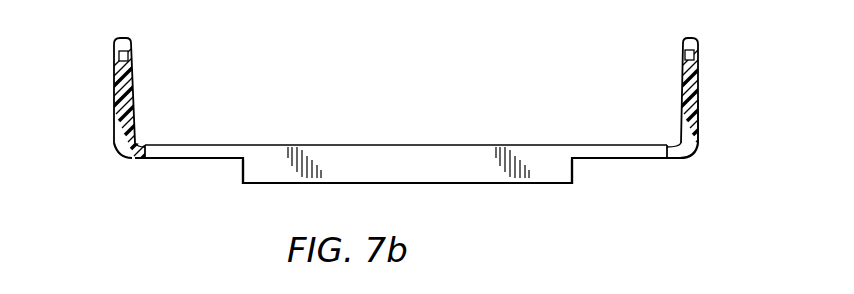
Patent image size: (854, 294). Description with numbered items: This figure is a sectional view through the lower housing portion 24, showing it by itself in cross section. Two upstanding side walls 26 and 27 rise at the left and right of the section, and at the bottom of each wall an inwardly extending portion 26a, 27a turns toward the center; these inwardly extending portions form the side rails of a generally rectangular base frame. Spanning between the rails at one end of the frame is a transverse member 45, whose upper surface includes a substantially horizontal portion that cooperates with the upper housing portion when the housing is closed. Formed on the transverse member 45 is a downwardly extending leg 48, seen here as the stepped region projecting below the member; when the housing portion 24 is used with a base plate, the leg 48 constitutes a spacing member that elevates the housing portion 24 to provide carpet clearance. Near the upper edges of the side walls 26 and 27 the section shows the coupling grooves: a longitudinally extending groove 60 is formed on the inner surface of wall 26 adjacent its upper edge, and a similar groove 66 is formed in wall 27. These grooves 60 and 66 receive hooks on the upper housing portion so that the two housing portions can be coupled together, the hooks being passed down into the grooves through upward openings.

The lower housing portion 24 is at (702, 150).
The side wall 26 is at (698, 88).
The inwardly extending portion 26a is at (667, 142).
The side wall 27 is at (117, 96).
The inwardly extending portion 27a is at (147, 145).
The transverse member 45 is at (603, 160).
The downwardly extending leg 48 is at (485, 177).
The longitudinally extending groove 60 is at (685, 57).
The groove 66 is at (130, 53).